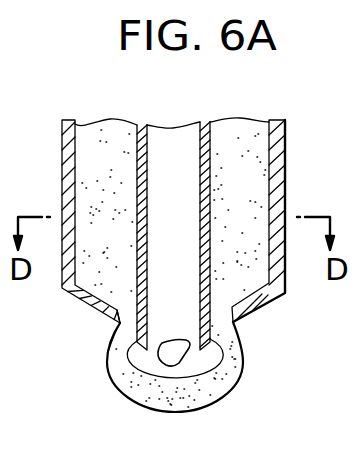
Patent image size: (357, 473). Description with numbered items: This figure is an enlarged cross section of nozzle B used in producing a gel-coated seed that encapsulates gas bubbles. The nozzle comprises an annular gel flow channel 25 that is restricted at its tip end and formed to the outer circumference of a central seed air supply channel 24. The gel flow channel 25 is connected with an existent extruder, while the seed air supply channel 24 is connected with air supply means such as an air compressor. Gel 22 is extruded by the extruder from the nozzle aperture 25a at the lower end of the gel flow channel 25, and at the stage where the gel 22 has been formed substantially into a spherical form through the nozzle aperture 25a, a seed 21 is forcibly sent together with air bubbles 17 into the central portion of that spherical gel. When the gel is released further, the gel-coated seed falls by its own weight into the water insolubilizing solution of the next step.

The gel 22 is at (253, 170).
The annular gel flow channel 25 is at (100, 137).
The nozzle aperture 25a is at (122, 318).
The seed air supply channel 24 is at (171, 143).
The air bubbles 17 is at (207, 358).
The seed 21 is at (178, 356).